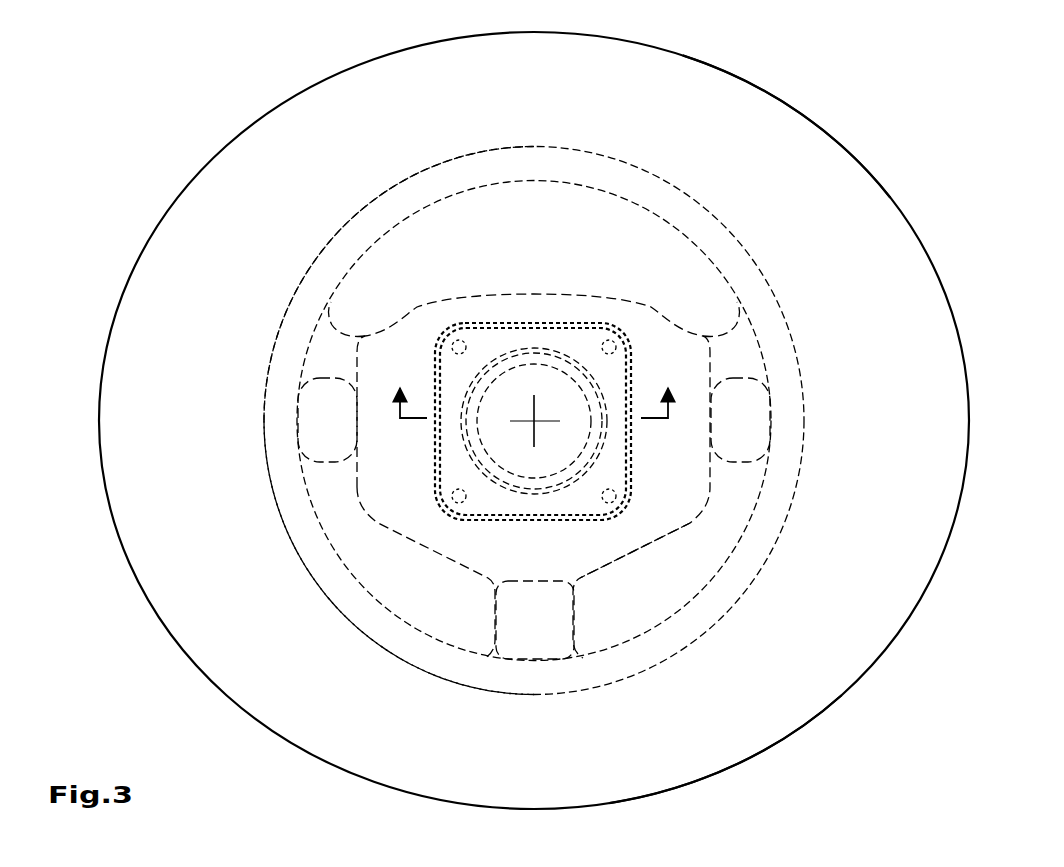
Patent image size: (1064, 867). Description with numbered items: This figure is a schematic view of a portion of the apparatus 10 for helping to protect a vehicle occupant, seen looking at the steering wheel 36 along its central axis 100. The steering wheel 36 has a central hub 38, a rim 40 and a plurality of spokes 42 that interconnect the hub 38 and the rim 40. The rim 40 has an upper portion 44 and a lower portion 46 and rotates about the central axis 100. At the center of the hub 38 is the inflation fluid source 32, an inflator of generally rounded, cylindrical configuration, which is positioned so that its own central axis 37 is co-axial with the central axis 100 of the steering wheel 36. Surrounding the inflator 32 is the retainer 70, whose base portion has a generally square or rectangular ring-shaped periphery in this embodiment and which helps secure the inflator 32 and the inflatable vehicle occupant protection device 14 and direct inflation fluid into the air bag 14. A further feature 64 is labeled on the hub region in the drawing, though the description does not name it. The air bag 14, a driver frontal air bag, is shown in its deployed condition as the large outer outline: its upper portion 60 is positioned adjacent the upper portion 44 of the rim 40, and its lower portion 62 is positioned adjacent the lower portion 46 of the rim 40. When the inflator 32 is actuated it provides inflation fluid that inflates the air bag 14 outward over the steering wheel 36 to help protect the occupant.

The apparatus 10 is at (150, 100).
The inflatable vehicle occupant protection device 14 is at (934, 332).
The inflation fluid source 32 is at (507, 392).
The steering wheel 36 is at (262, 411).
The central axis of the inflator 37 is at (534, 421).
The central hub 38 is at (388, 472).
The rim 40 is at (678, 197).
The spokes 42 is at (329, 352).
The upper portion of the steering wheel rim 44 is at (410, 184).
The lower portion of the steering wheel rim 46 is at (401, 652).
The upper portion of the air bag 60 is at (820, 152).
The lower portion of the air bag 62 is at (718, 740).
The diagonal wall 64 is at (603, 553).
The retainer 70 is at (578, 342).
The central axis of the steering wheel 100 is at (534, 421).